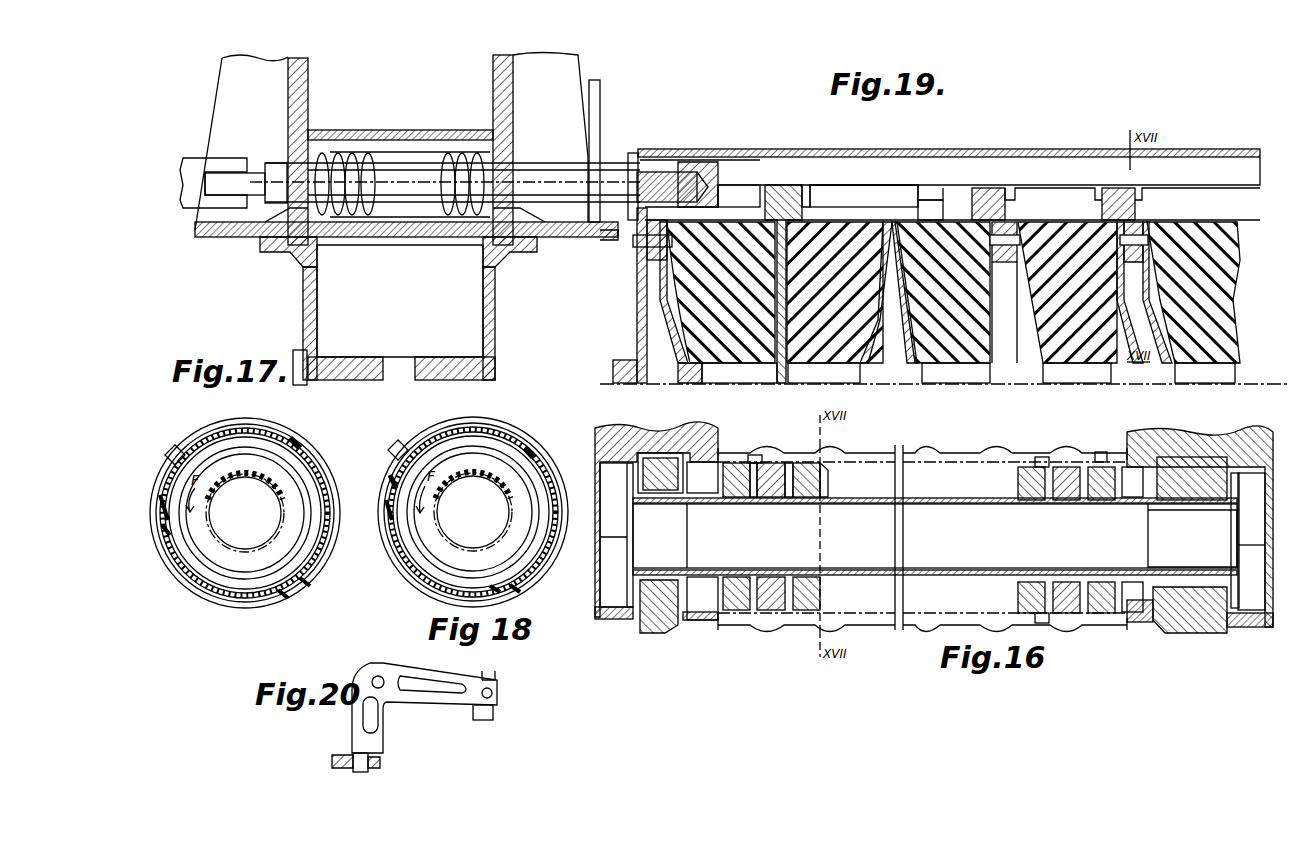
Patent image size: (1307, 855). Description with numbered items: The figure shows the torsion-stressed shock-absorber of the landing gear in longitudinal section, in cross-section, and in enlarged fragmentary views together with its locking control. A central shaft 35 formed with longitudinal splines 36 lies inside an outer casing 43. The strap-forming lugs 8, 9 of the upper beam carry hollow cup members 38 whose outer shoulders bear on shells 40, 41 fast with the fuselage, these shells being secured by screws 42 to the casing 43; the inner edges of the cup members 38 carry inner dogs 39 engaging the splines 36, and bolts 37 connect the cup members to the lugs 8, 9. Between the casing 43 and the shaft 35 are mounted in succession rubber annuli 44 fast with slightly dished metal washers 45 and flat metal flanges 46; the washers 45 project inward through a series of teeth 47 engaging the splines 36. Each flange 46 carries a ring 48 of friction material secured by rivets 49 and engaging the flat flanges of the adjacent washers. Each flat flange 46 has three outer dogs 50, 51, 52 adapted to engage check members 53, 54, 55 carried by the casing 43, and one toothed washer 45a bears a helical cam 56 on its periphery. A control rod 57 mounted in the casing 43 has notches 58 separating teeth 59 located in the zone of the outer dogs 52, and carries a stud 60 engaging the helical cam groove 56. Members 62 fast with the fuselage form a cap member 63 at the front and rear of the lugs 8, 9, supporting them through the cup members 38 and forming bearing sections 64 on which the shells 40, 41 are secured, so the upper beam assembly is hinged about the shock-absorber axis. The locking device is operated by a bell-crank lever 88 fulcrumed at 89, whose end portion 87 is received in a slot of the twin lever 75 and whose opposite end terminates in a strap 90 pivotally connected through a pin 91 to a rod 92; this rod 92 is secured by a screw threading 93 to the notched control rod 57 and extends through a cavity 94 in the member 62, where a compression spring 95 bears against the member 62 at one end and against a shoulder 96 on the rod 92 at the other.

In FIG. 16, the strap-forming lug 8 is at (663, 465).
In FIG. 16, the strap-forming lug 9 is at (1190, 470).
In FIG. 17, the central shaft 35 is at (243, 480).
In FIG. 18, the central shaft 35 is at (473, 512).
In FIG. 16, the central shaft 35 is at (850, 567).
In FIG. 17, the longitudinal splines 36 is at (258, 480).
In FIG. 18, the longitudinal splines 36 is at (492, 478).
In FIG. 16, the longitudinal splines 36 is at (862, 575).
In FIG. 16, the bolts 37 is at (1238, 590).
In FIG. 16, the hollow cup member 38 is at (1232, 505).
In FIG. 16, the inner dogs 39 is at (1215, 567).
In FIG. 16, the shell 40 is at (698, 620).
In FIG. 16, the shell 41 is at (1148, 622).
In FIG. 16, the screws 42 is at (1104, 452).
In FIG. 19, the outer casing 43 is at (970, 150).
In FIG. 17, the outer casing 43 is at (285, 440).
In FIG. 18, the outer casing 43 is at (562, 558).
In FIG. 16, the outer casing 43 is at (970, 452).
In FIG. 19, the rubber annuli 44 is at (690, 340).
In FIG. 16, the rubber annuli 44 is at (740, 465).
In FIG. 19, the dished metal washer 45 is at (680, 310).
In FIG. 16, the dished metal washer 45 is at (725, 500).
In FIG. 16, the toothed washer 45a is at (790, 500).
In FIG. 19, the flat metal flange 46 is at (778, 370).
In FIG. 16, the flat metal flange 46 is at (752, 500).
In FIG. 19, the teeth 47 is at (702, 374).
In FIG. 19, the friction ring 48 is at (1148, 222).
In FIG. 17, the friction ring 48 is at (205, 450).
In FIG. 18, the friction ring 48 is at (440, 450).
In FIG. 19, the rivets 49 is at (1003, 270).
In FIG. 17, the outer dog 50 is at (165, 535).
In FIG. 18, the outer dog 50 is at (492, 585).
In FIG. 17, the outer dog 51 is at (305, 583).
In FIG. 18, the outer dog 51 is at (540, 463).
In FIG. 19, the outer dog 52 is at (812, 188).
In FIG. 17, the outer dog 52 is at (302, 446).
In FIG. 18, the outer dog 52 is at (392, 480).
In FIG. 16, the outer dog 52 is at (1042, 458).
In FIG. 17, the check member 53 is at (282, 596).
In FIG. 18, the check member 53 is at (512, 595).
In FIG. 17, the check member 54 is at (318, 452).
In FIG. 18, the check member 54 is at (532, 452).
In FIG. 17, the check member 55 is at (160, 505).
In FIG. 18, the check member 55 is at (388, 510).
In FIG. 19, the helical cam 56 is at (975, 190).
In FIG. 16, the helical cam 56 is at (780, 463).
In FIG. 19, the control rod 57 is at (820, 160).
In FIG. 17, the control rod 57 is at (165, 458).
In FIG. 18, the control rod 57 is at (390, 448).
In FIG. 19, the notches 58 is at (735, 185).
In FIG. 19, the teeth 59 is at (775, 185).
In FIG. 19, the stud 60 is at (925, 200).
In FIG. 19, the member 62 is at (305, 62).
In FIG. 16, the member 62 is at (700, 440).
In FIG. 16, the cap member 63 is at (605, 595).
In FIG. 16, the bearing section 64 is at (705, 468).
In FIG. 20, the twin lever 75 is at (337, 768).
In FIG. 20, the end portion 87 is at (365, 772).
In FIG. 20, the bell-crank lever 88 is at (395, 702).
In FIG. 20, the fulcrum 89 is at (385, 677).
In FIG. 19, the strap 90 is at (196, 158).
In FIG. 20, the strap 90 is at (482, 678).
In FIG. 20, the pin 91 is at (493, 692).
In FIG. 19, the rod 92 is at (273, 163).
In FIG. 20, the rod 92 is at (488, 720).
In FIG. 19, the screw threading 93 is at (668, 165).
In FIG. 19, the cavity 94 is at (372, 152).
In FIG. 19, the compression spring 95 is at (362, 217).
In FIG. 19, the shoulder 96 is at (513, 150).